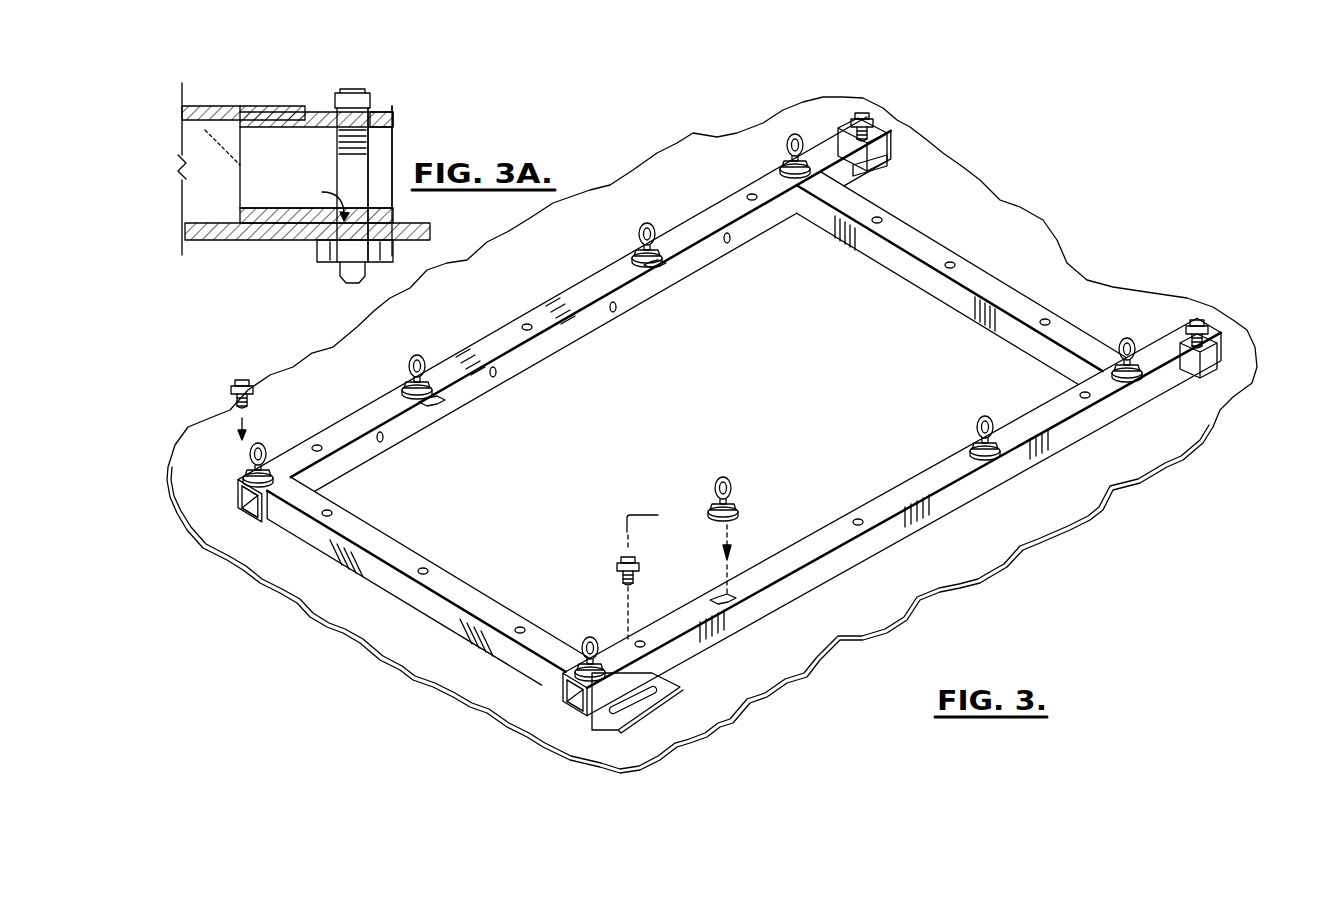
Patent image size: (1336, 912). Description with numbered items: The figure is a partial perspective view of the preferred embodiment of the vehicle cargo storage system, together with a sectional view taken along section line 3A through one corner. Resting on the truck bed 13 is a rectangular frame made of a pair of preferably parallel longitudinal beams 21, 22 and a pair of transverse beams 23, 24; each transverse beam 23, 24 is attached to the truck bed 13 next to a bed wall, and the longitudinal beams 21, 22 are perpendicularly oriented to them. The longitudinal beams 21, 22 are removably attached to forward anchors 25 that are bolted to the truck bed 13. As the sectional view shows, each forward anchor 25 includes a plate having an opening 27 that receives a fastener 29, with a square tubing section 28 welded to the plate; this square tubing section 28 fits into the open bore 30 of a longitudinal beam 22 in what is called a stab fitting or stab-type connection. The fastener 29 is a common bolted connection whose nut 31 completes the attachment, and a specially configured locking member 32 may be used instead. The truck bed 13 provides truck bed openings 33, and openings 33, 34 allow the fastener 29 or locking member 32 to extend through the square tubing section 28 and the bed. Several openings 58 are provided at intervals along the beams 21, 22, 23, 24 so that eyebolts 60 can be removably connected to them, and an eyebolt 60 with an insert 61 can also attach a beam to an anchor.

In FIG. 3A, the truck bed 13 is at (430, 234).
In FIG. 3, the truck bed 13 is at (790, 411).
In FIG. 3, the longitudinal beam 21 is at (605, 347).
In FIG. 3A, the longitudinal beam 22 is at (245, 105).
In FIG. 3, the longitudinal beam 22 is at (880, 510).
In FIG. 3, the transverse beam 23 is at (917, 270).
In FIG. 3, the transverse beam 24 is at (455, 600).
In FIG. 3A, the forward anchor 25 is at (375, 115).
In FIG. 3, the forward anchor 25 is at (888, 138).
In FIG. 3A, the opening 27 is at (393, 222).
In FIG. 3, the opening 27 is at (868, 170).
In FIG. 3A, the square tubing section 28 is at (240, 170).
In FIG. 3, the square tubing section 28 is at (412, 598).
In FIG. 3A, the fastener 29 is at (345, 155).
In FIG. 3A, the open bore 30 is at (205, 130).
In FIG. 3A, the nut 31 is at (330, 93).
In FIG. 3A, the locking member 32 is at (322, 260).
In FIG. 3, the locking member 32 is at (866, 114).
In FIG. 3A, the truck bed opening 33 is at (318, 198).
In FIG. 3A, the opening 34 is at (372, 125).
In FIG. 3, the opening 58 is at (752, 195).
In FIG. 3, the eyebolt 60 is at (793, 140).
In FIG. 3, the insert 61 is at (658, 262).
In FIG. 3, the section line 3A is at (1183, 342).